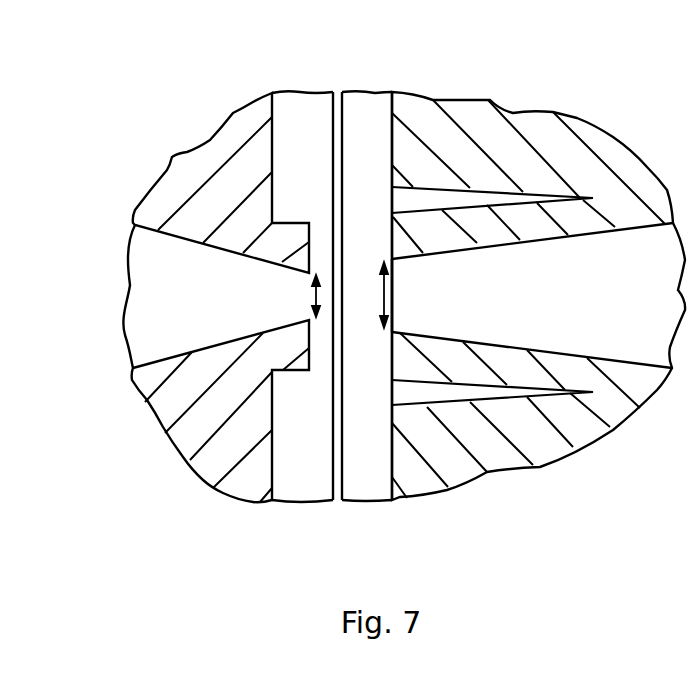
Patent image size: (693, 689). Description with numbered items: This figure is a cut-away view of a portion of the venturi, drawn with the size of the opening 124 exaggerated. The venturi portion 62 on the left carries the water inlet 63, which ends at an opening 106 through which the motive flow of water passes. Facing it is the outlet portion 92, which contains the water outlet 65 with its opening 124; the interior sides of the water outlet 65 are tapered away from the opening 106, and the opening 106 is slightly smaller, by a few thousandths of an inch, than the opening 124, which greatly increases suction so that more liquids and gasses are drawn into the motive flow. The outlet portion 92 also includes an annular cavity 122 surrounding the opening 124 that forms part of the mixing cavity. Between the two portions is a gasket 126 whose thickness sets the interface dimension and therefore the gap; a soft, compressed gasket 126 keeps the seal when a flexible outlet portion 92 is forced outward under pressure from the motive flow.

The venturi portion 62 is at (182, 155).
The outlet portion 92 is at (615, 138).
The gasket 126 is at (345, 124).
The annular cavity 122 is at (426, 194).
The opening 124 is at (392, 305).
The opening 106 is at (307, 297).
The water inlet 63 is at (178, 295).
The water outlet 65 is at (644, 295).